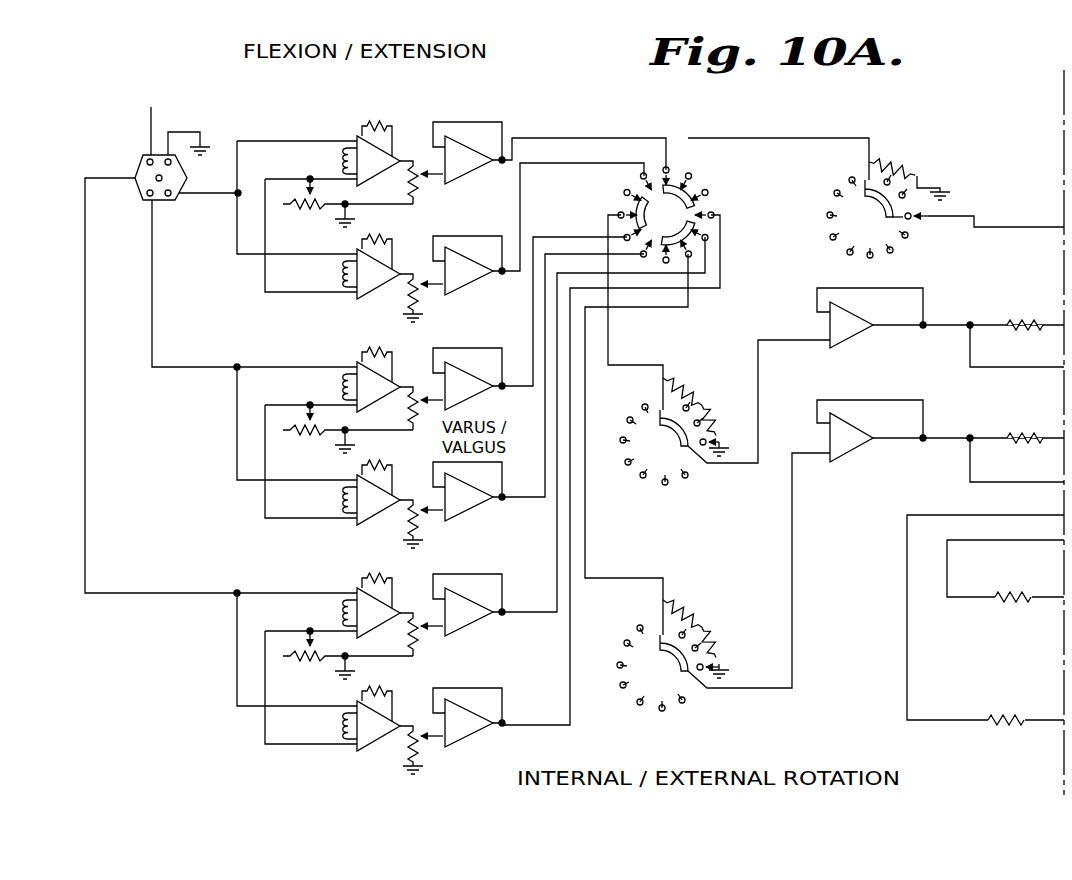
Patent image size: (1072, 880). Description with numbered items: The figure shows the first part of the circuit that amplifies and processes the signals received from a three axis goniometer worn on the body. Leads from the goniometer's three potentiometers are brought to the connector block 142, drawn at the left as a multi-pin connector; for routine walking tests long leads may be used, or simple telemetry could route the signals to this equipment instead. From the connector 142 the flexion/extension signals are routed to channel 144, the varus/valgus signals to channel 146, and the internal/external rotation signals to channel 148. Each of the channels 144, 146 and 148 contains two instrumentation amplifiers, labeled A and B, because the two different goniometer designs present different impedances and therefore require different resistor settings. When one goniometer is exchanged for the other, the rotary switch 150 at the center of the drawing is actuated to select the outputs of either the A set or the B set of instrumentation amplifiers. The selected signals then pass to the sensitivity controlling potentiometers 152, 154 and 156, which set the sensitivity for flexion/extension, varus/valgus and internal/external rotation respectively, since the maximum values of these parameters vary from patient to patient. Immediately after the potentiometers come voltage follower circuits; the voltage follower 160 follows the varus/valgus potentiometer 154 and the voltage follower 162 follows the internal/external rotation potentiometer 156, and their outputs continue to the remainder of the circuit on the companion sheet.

The connector block 142 is at (140, 160).
The flexion/extension channel 144 is at (371, 221).
The varus/valgus channel 146 is at (371, 447).
The internal/external rotation channel 148 is at (387, 673).
The switch 150 is at (697, 182).
The sensitivity controlling potentiometer 152 is at (915, 170).
The sensitivity controlling potentiometer 154 is at (712, 400).
The sensitivity controlling potentiometer 156 is at (713, 627).
The voltage follower circuit 160 is at (847, 330).
The voltage follower circuit 162 is at (850, 447).